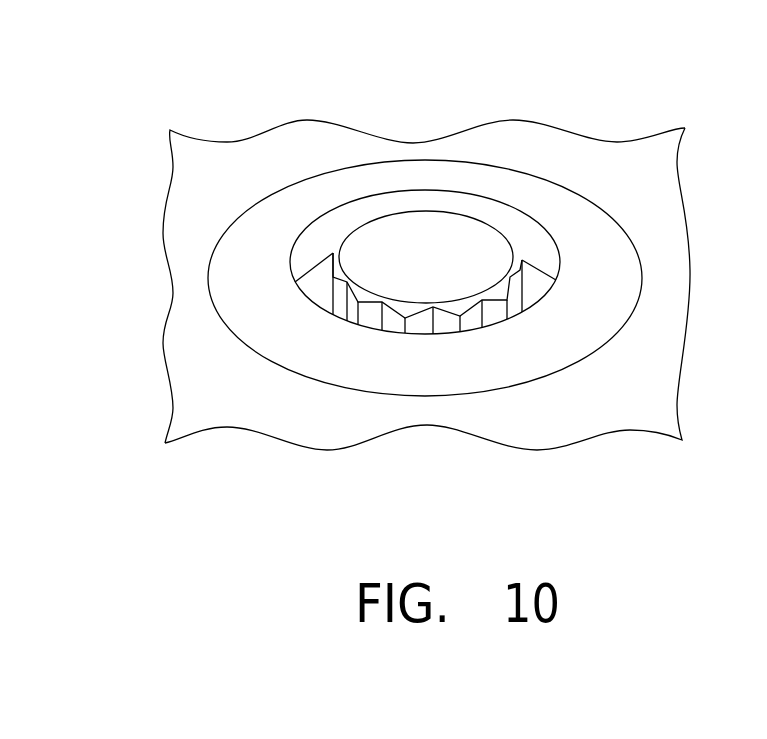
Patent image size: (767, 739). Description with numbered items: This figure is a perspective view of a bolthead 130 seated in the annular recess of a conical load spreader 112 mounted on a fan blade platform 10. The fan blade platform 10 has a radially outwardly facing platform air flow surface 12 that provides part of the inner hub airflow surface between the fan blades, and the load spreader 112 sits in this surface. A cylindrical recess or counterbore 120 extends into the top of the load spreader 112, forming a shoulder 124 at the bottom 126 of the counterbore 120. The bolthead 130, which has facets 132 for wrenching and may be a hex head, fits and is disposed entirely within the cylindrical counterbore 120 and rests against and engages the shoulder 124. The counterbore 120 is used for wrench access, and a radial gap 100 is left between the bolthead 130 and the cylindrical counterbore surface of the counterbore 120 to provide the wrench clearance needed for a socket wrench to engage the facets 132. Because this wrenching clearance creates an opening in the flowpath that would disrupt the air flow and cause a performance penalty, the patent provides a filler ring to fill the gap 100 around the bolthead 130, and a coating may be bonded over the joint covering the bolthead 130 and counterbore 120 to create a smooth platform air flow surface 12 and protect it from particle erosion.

The fan blade platform 10 is at (682, 380).
The platform air flow surface 12 is at (237, 162).
The radial gap 100 is at (517, 180).
The forward conical load spreader 112 is at (528, 195).
The cylindrical counterbore 120 is at (502, 177).
The shoulder 124 is at (528, 283).
The bottom 126 is at (315, 282).
The bolthead 130 is at (432, 273).
The facets 132 is at (422, 318).